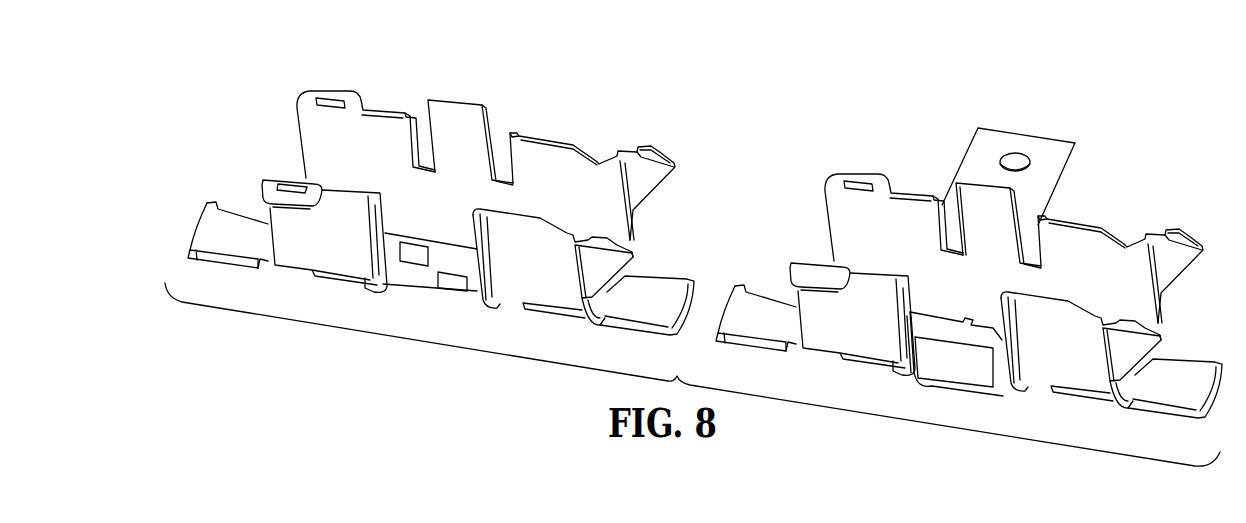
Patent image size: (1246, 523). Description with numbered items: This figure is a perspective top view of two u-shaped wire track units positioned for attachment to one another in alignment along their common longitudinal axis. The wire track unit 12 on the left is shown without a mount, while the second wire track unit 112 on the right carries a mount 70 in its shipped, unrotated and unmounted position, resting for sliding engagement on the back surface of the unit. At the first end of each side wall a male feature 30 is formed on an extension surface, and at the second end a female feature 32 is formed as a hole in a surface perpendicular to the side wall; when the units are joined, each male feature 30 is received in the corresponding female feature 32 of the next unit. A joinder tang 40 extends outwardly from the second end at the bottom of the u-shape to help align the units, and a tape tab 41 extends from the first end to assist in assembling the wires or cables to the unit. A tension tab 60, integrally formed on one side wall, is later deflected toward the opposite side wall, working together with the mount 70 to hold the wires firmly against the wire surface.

The wire track unit 12 is at (544, 153).
The male feature 30 is at (645, 146).
The female feature 32 is at (328, 95).
The joinder tang 40 is at (756, 296).
The tape tab 41 is at (1175, 407).
The tension tab 60 is at (986, 180).
The mount 70 is at (1008, 153).
The wire track unit 112 is at (1014, 238).